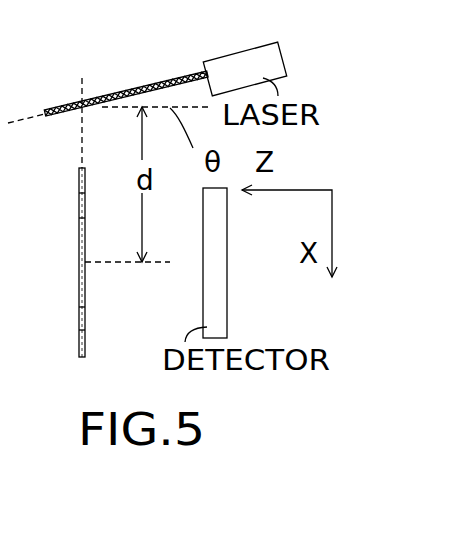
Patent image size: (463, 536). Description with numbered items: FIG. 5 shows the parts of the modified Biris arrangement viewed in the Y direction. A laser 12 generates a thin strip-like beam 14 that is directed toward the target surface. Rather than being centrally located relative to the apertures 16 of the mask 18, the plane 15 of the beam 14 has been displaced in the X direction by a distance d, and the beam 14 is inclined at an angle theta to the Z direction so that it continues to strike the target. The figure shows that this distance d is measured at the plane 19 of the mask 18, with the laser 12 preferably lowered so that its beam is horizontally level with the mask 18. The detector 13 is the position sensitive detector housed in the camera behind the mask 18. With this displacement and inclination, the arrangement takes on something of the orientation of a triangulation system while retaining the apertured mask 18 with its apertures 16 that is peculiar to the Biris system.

The laser 12 is at (247, 62).
The position sensitive detector 13 is at (215, 320).
The beam 14 is at (138, 90).
The beam plane 15 is at (80, 97).
The apertures 16 is at (80, 320).
The mask 18 is at (85, 287).
The plane of the mask 19 is at (82, 138).